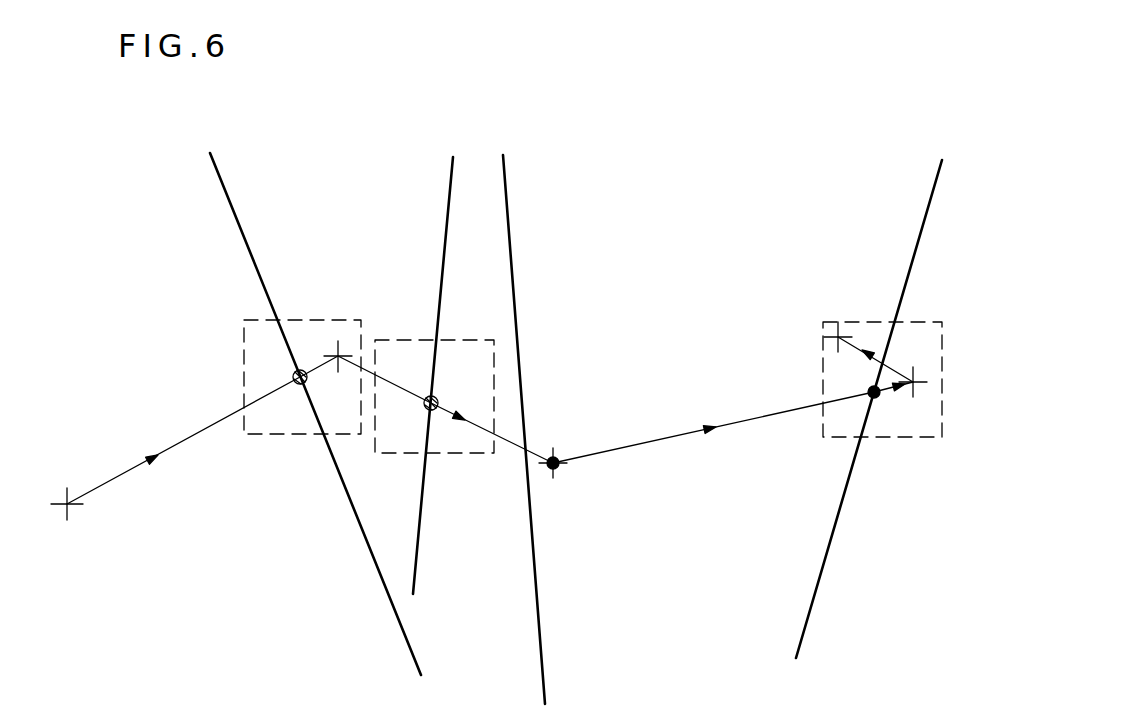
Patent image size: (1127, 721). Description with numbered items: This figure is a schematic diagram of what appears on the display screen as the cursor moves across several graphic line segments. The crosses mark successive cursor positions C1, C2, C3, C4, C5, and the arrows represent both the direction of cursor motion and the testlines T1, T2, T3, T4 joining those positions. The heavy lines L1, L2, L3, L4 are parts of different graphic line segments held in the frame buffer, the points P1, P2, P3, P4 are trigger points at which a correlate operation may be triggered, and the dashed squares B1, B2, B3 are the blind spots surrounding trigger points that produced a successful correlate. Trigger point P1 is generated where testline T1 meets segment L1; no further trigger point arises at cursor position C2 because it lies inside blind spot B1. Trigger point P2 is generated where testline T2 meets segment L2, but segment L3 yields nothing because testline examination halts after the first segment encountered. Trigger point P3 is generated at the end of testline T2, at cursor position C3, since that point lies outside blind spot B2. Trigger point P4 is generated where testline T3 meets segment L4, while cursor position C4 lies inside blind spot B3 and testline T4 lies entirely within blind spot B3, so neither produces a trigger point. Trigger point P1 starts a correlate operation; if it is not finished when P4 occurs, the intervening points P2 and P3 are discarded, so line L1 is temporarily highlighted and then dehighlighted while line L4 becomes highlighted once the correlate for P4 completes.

The graphic line segment L1 is at (248, 250).
The graphic line segment L2 is at (443, 257).
The graphic line segment L3 is at (510, 244).
The graphic line segment L4 is at (908, 275).
The blind spot B1 is at (342, 320).
The blind spot B2 is at (450, 453).
The blind spot B3 is at (950, 380).
The cursor position C1 is at (82, 515).
The cursor position C2 is at (324, 351).
The cursor position C3 is at (566, 472).
The cursor position C4 is at (915, 401).
The cursor position C5 is at (822, 329).
The testline T1 is at (190, 435).
The testline T2 is at (398, 380).
The testline T3 is at (658, 440).
The testline T4 is at (890, 368).
The trigger point P1 is at (298, 383).
The trigger point P2 is at (440, 397).
The trigger point P3 is at (562, 457).
The trigger point P4 is at (865, 393).